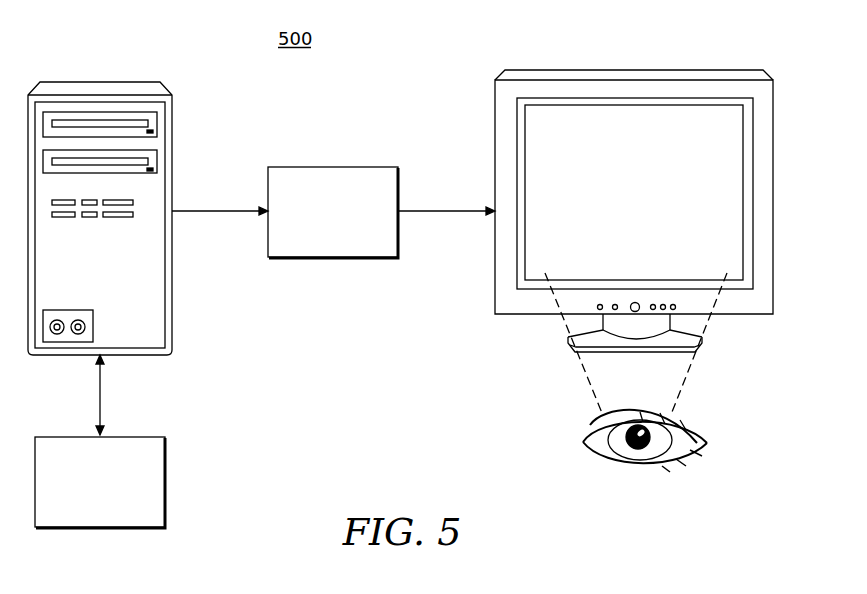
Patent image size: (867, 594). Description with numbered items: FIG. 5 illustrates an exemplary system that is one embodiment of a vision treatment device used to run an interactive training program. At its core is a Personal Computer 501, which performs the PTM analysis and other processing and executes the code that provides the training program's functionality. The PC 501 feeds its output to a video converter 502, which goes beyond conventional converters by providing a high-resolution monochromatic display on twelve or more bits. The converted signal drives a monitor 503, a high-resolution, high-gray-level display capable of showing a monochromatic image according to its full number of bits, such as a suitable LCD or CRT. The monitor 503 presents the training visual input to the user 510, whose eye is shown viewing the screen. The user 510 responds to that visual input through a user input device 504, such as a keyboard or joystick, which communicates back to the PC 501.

The Personal Computer (PC) 501 is at (172, 277).
The video converter 502 is at (340, 258).
The monitor 503 is at (495, 265).
The user input device 504 is at (165, 477).
The user 510 is at (693, 432).